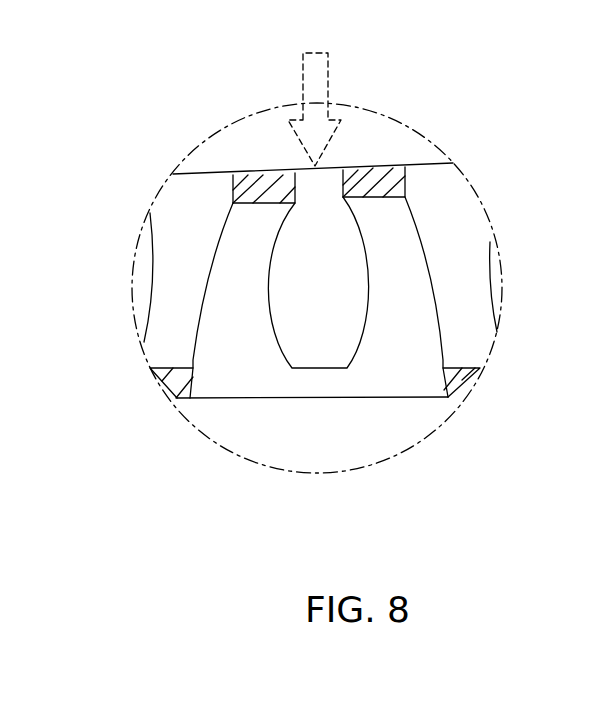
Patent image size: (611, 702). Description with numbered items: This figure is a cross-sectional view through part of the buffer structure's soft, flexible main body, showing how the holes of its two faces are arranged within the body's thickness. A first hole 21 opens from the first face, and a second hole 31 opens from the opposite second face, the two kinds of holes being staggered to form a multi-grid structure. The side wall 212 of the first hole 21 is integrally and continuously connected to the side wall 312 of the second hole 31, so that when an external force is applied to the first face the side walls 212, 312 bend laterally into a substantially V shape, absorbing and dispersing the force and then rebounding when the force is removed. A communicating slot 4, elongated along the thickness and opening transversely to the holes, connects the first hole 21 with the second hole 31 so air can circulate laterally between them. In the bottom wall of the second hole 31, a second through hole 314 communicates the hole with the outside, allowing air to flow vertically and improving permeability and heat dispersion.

The first hole 21 is at (188, 206).
The side wall of first hole 212 is at (456, 243).
The side wall of second hole 312 is at (230, 283).
The second through hole 314 is at (348, 161).
The second hole 31 is at (399, 395).
The communicating slot 4 is at (333, 291).